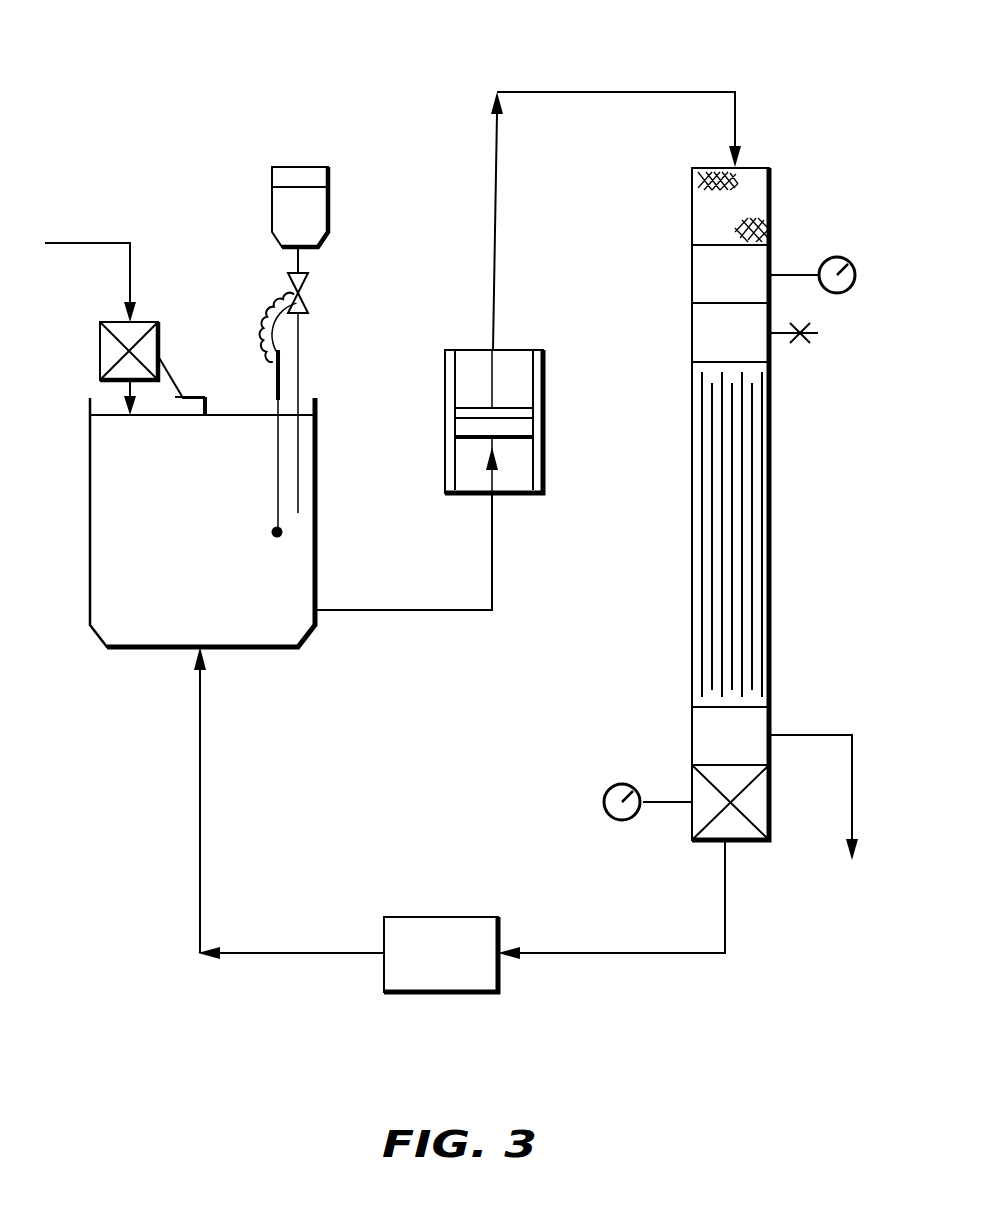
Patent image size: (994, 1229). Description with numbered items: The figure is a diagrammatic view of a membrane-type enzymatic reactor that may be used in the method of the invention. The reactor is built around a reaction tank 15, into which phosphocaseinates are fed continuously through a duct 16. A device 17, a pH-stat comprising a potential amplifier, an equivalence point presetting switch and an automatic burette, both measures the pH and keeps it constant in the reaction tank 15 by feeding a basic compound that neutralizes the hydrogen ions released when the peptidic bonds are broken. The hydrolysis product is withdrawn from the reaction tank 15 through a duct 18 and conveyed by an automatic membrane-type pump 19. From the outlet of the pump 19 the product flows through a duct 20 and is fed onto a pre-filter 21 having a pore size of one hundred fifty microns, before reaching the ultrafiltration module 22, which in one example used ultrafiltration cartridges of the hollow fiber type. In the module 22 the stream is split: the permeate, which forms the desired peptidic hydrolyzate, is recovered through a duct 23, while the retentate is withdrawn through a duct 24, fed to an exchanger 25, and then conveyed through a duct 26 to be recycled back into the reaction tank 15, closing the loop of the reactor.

The reaction tank 15 is at (130, 555).
The duct 16 is at (103, 242).
The device 17 is at (320, 215).
The duct 18 is at (418, 612).
The automatic membrane-type pump 19 is at (538, 455).
The duct 20 is at (580, 90).
The pre-filter 21 is at (760, 202).
The ultrafiltration module 22 is at (743, 468).
The duct 23 is at (827, 735).
The duct 24 is at (643, 953).
The exchanger 25 is at (488, 970).
The duct 26 is at (202, 750).